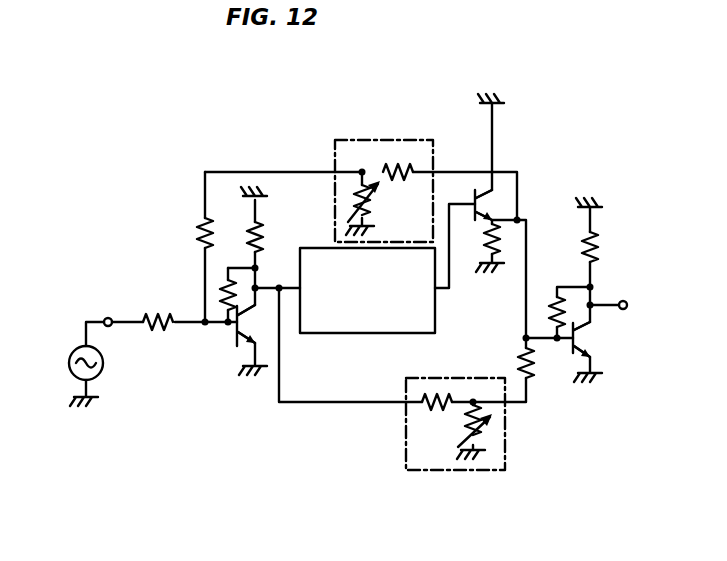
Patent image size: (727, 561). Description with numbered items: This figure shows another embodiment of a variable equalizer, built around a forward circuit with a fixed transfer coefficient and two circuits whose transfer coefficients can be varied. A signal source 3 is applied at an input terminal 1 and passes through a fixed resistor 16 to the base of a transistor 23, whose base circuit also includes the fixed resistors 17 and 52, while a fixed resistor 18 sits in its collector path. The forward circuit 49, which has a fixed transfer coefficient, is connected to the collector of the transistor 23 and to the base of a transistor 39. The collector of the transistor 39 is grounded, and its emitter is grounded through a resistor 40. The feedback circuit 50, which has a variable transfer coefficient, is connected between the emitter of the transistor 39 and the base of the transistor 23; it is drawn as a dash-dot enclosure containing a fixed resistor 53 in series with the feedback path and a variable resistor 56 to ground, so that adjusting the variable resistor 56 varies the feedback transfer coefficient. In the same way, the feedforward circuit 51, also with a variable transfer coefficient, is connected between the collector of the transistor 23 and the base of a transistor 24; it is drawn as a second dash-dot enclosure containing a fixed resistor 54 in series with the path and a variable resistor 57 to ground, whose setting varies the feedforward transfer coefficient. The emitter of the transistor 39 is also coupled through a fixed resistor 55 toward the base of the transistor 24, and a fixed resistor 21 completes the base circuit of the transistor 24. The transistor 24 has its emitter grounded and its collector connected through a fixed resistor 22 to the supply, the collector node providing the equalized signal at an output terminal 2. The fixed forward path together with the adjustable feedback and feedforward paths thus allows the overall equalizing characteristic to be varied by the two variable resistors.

The input terminal 1 is at (108, 318).
The output terminal 2 is at (625, 309).
The signal source 3 is at (69, 363).
The fixed resistor 16 is at (152, 333).
The fixed resistor 17 is at (222, 295).
The fixed resistor 18 is at (258, 222).
The fixed resistor 21 is at (552, 296).
The fixed resistor 22 is at (598, 252).
The transistor 23 is at (236, 330).
The transistor 24 is at (583, 332).
The transistor 39 is at (483, 203).
The resistor 40 is at (500, 244).
The forward circuit 49 is at (320, 333).
The feedback circuit 50 is at (377, 138).
The feedforward circuit 51 is at (437, 472).
The fixed resistor 52 is at (198, 229).
The fixed resistor 53 is at (418, 164).
The fixed resistor 54 is at (443, 393).
The fixed resistor 55 is at (530, 360).
The variable resistor 56 is at (365, 200).
The variable resistor 57 is at (465, 424).